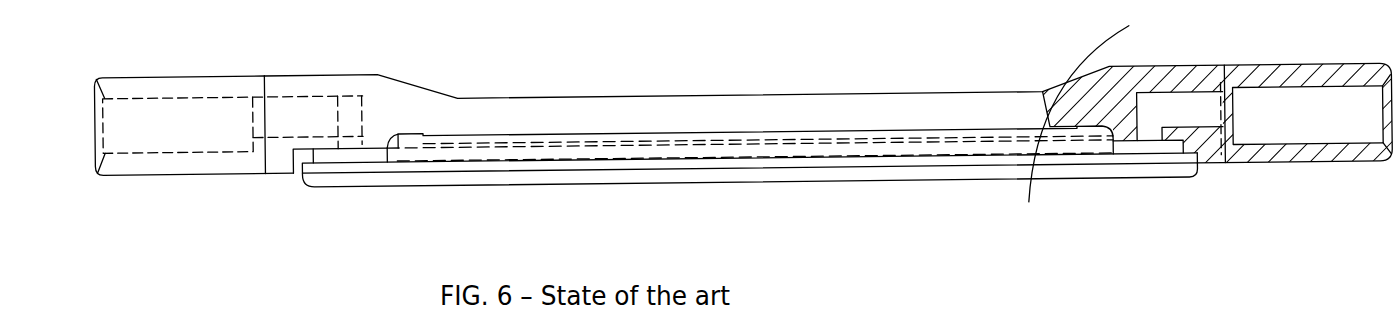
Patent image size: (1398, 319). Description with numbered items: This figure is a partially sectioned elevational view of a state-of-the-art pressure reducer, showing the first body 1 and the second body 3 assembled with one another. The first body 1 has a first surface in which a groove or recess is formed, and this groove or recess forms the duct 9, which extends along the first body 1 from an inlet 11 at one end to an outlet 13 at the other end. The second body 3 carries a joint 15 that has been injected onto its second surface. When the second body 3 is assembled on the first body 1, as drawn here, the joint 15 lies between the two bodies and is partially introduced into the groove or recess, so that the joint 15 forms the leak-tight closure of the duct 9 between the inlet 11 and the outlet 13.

The first body 1 is at (1003, 103).
The second body 3 is at (1183, 168).
The duct 9 is at (638, 140).
The inlet 11 is at (178, 135).
The outlet 13 is at (1320, 127).
The joint 15 is at (790, 152).